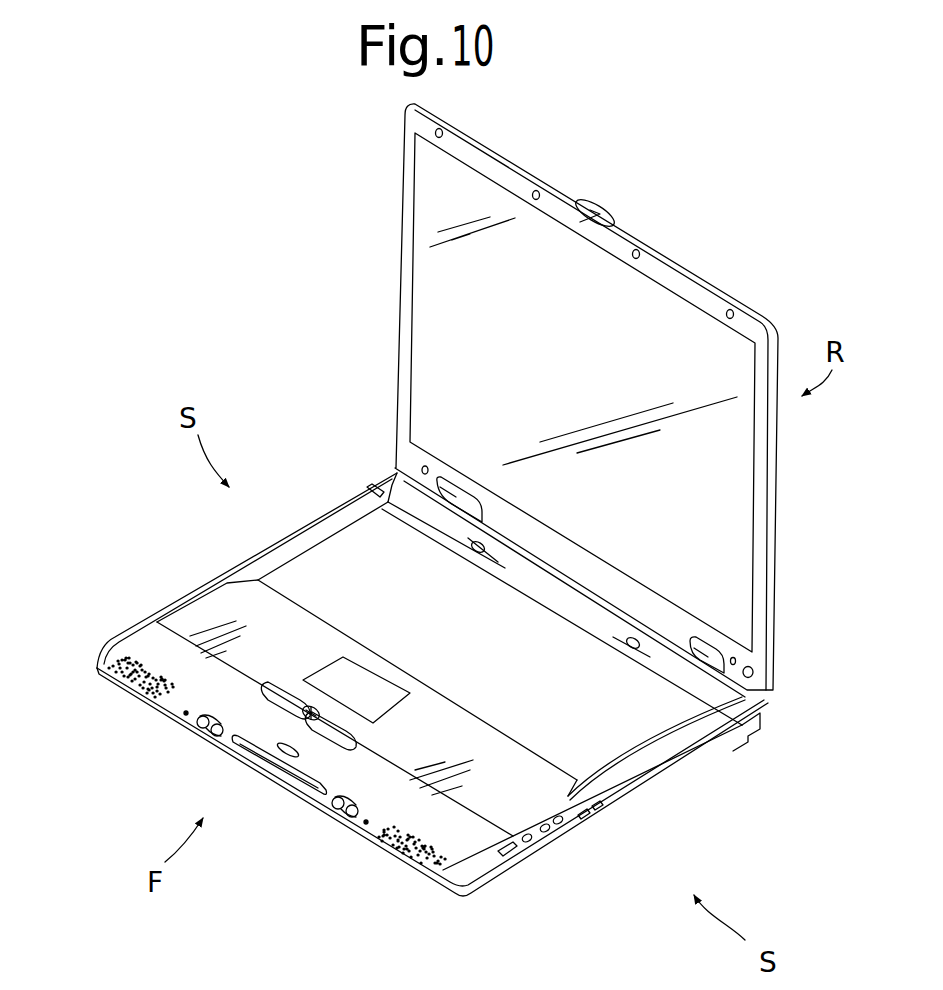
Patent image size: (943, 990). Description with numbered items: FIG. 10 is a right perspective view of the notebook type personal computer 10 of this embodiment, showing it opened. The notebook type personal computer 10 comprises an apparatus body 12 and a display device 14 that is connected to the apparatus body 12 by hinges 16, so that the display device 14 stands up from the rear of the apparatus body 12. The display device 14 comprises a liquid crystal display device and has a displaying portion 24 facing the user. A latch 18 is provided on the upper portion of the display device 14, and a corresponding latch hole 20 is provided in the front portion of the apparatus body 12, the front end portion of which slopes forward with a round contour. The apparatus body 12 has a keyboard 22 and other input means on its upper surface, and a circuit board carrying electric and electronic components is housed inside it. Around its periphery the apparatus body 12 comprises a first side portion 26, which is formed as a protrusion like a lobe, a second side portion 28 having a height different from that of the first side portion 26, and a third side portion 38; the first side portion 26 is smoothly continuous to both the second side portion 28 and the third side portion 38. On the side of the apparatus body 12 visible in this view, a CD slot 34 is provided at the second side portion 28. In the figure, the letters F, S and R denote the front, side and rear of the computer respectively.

The notebook type personal computer 10 is at (699, 208).
The apparatus body 12 is at (523, 795).
The display device 14 is at (778, 476).
The hinges 16 is at (456, 495).
The latch 18 is at (588, 222).
The latch hole 20 is at (287, 752).
The keyboard 22 is at (683, 757).
The displaying portion 24 is at (677, 323).
The first side portion 26 is at (104, 648).
The second side portion 28 is at (593, 817).
The CD slot 34 is at (685, 760).
The third side portion 38 is at (350, 496).